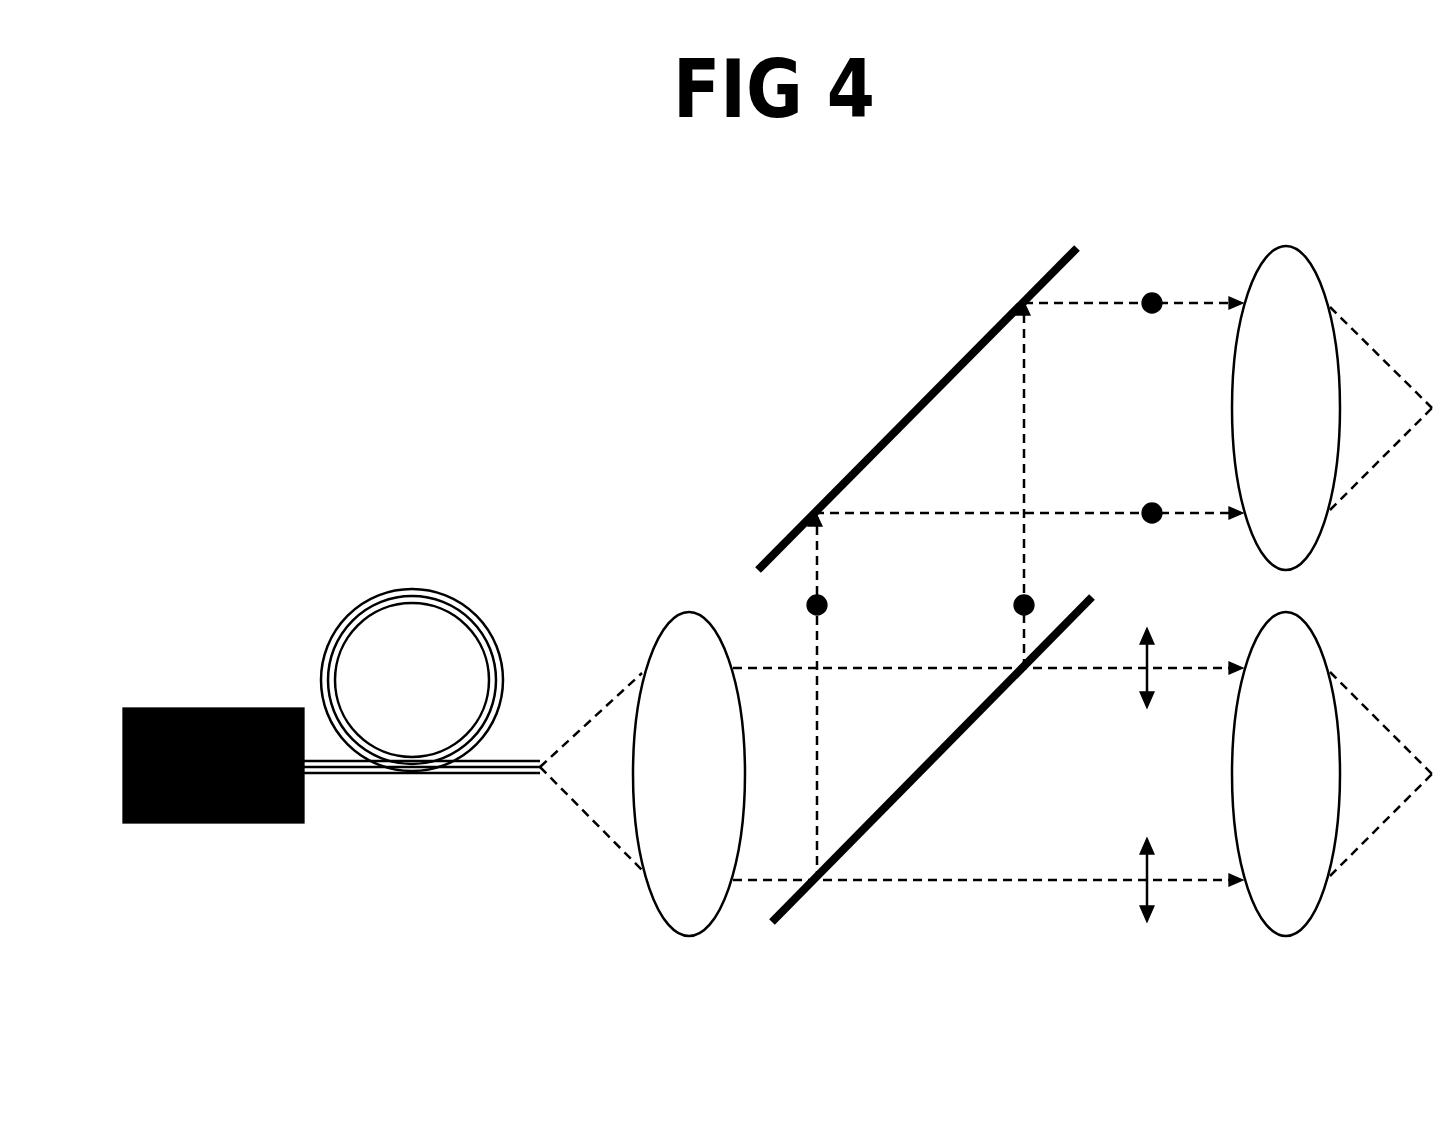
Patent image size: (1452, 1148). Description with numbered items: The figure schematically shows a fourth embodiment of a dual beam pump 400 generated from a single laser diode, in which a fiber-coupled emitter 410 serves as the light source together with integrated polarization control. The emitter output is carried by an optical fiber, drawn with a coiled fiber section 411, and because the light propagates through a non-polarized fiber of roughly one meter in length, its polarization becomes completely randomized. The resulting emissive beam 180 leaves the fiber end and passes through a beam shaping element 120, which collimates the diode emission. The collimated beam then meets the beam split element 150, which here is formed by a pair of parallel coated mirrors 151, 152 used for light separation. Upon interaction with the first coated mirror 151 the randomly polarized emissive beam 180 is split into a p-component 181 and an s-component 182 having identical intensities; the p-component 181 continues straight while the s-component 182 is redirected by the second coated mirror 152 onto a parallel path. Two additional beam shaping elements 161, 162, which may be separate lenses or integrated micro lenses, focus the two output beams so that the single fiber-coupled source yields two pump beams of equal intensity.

The dual beam pump 400 is at (491, 609).
The fiber-coupled emitter 410 is at (213, 765).
The fiber coil 411 is at (412, 680).
The beam shaping element 120 is at (689, 774).
The beam split element 150 is at (917, 409).
The coated mirror 151 is at (932, 759).
The coated mirror 152 is at (1029, 482).
The emissive beam 180 is at (988, 698).
The p-component 181 is at (1267, 775).
The s-component 182 is at (1117, 454).
The beam shaping element 161 is at (1332, 774).
The beam shaping element 162 is at (1332, 408).